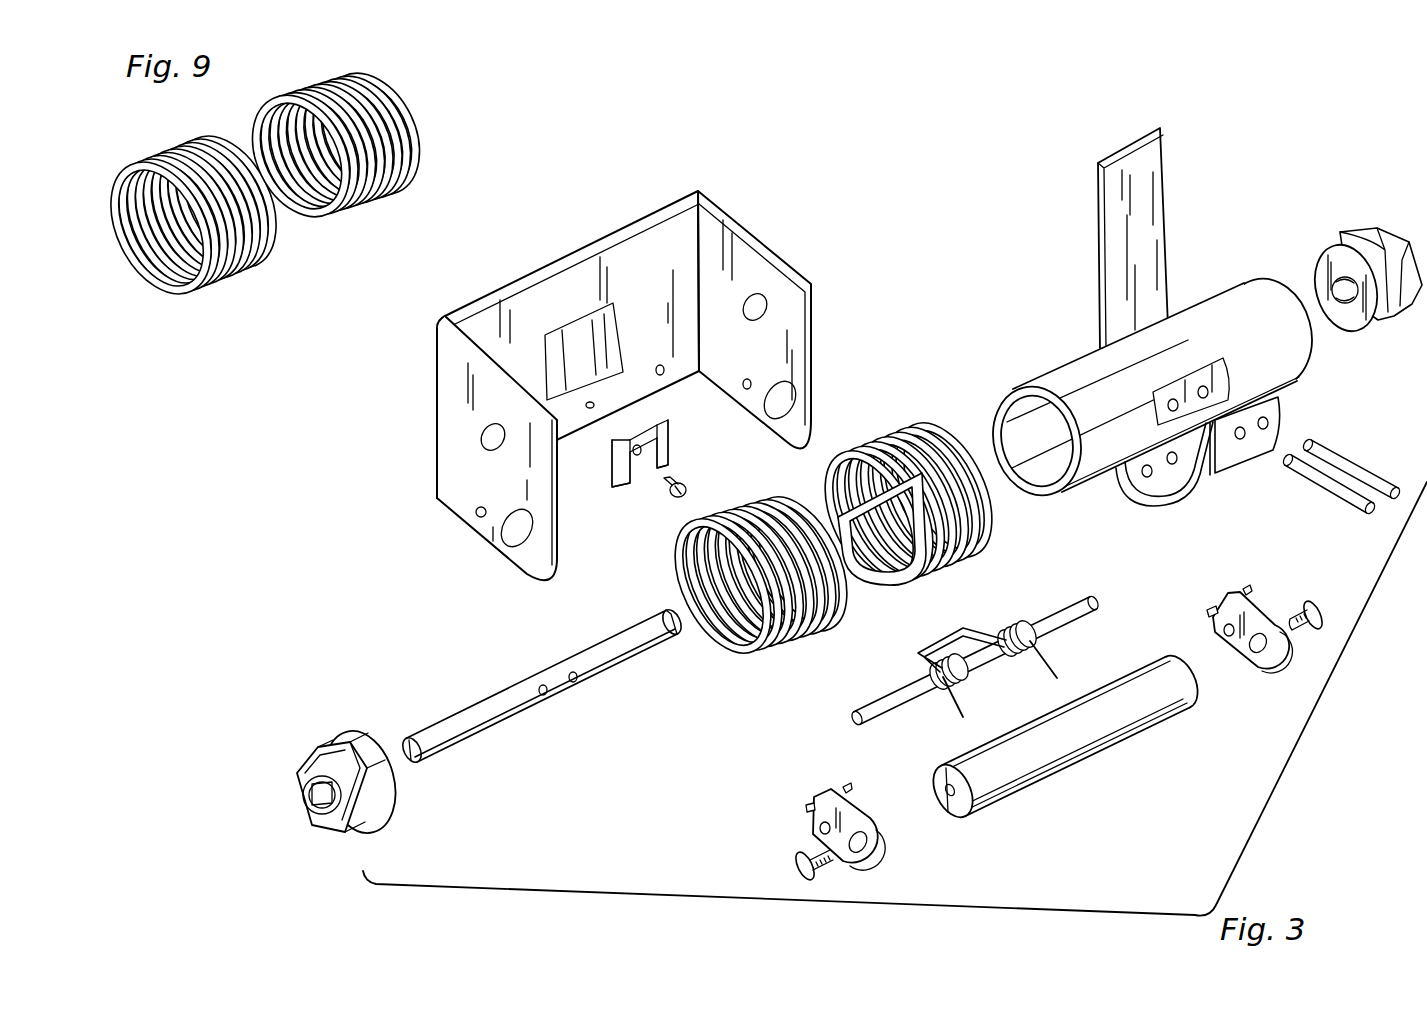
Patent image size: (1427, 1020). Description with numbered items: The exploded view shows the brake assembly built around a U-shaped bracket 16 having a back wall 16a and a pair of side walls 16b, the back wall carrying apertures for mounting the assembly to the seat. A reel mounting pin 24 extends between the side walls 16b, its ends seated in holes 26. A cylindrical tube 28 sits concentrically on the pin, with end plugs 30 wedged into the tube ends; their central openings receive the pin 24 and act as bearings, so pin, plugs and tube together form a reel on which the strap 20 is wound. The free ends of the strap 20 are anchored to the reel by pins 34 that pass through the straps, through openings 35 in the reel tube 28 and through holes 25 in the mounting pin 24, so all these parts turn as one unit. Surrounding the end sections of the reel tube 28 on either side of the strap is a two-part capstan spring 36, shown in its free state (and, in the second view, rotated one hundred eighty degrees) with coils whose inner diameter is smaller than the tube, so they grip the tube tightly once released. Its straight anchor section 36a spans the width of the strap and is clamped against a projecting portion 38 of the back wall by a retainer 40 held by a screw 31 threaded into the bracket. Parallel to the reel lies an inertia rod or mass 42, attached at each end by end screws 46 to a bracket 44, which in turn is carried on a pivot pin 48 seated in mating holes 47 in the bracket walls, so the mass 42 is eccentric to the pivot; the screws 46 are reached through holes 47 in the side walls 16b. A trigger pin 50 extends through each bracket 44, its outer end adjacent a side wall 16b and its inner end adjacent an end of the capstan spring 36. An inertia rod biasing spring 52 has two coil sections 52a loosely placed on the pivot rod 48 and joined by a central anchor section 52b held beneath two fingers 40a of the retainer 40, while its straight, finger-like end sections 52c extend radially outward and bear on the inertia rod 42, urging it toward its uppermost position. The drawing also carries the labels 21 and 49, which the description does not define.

In FIG. 3, the U-shaped bracket 16 is at (618, 394).
In FIG. 3, the back wall 16a is at (568, 344).
In FIG. 3, the side walls 16b is at (768, 250).
In FIG. 3, the strap 20 is at (1153, 203).
In FIG. 3, the clamp saddle 21 is at (1267, 423).
In FIG. 3, the reel mounting pin 24 is at (542, 686).
In FIG. 3, the holes 25 is at (573, 684).
In FIG. 3, the holes 26 is at (488, 448).
In FIG. 3, the cylindrical tube 28 is at (1181, 387).
In FIG. 3, the end plugs 30 is at (1362, 234).
In FIG. 3, the screw 31 is at (670, 495).
In FIG. 3, the pins 34 is at (1350, 470).
In FIG. 3, the openings 35 is at (1205, 388).
In FIG. 9, the capstan spring 36 is at (388, 180).
In FIG. 3, the capstan spring 36 is at (847, 528).
In FIG. 3, the anchor section 36a is at (880, 505).
In FIG. 3, the projecting portion 38 is at (593, 367).
In FIG. 3, the retainer 40 is at (652, 439).
In FIG. 3, the fingers 40a is at (606, 452).
In FIG. 3, the inertia rod 42 is at (1135, 718).
In FIG. 3, the bracket 44 is at (1049, 710).
In FIG. 3, the end screws 46 is at (798, 866).
In FIG. 3, the holes 47 is at (512, 535).
In FIG. 3, the pivot pin 48 is at (890, 700).
In FIG. 3, the flange small holes 49 is at (478, 514).
In FIG. 3, the trigger pin 50 is at (847, 790).
In FIG. 3, the inertia rod biasing spring 52 is at (994, 663).
In FIG. 3, the coil sections 52a is at (960, 678).
In FIG. 3, the central anchor section 52b is at (938, 645).
In FIG. 3, the end sections 52c is at (1057, 670).